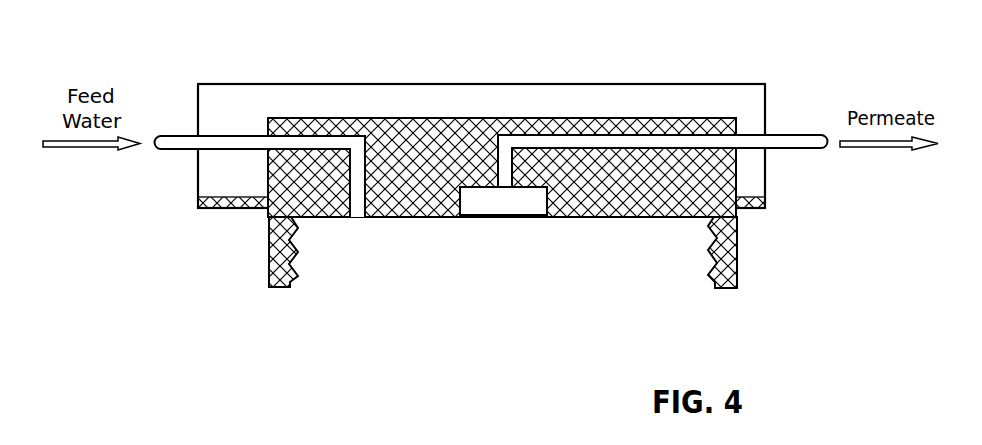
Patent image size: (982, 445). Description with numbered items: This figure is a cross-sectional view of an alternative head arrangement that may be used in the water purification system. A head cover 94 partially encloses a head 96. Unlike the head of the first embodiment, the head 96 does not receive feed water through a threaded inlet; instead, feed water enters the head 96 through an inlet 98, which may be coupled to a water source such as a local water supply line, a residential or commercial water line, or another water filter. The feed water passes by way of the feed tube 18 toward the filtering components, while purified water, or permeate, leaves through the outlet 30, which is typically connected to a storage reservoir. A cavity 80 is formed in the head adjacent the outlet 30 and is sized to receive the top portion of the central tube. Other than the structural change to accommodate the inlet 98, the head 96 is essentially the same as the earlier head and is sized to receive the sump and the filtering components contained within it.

The head cover 94 is at (280, 83).
The feed tube 18 is at (359, 204).
The head 96 is at (737, 240).
The inlet 98 is at (175, 146).
The outlet 30 is at (793, 150).
The cavity 80 is at (495, 203).